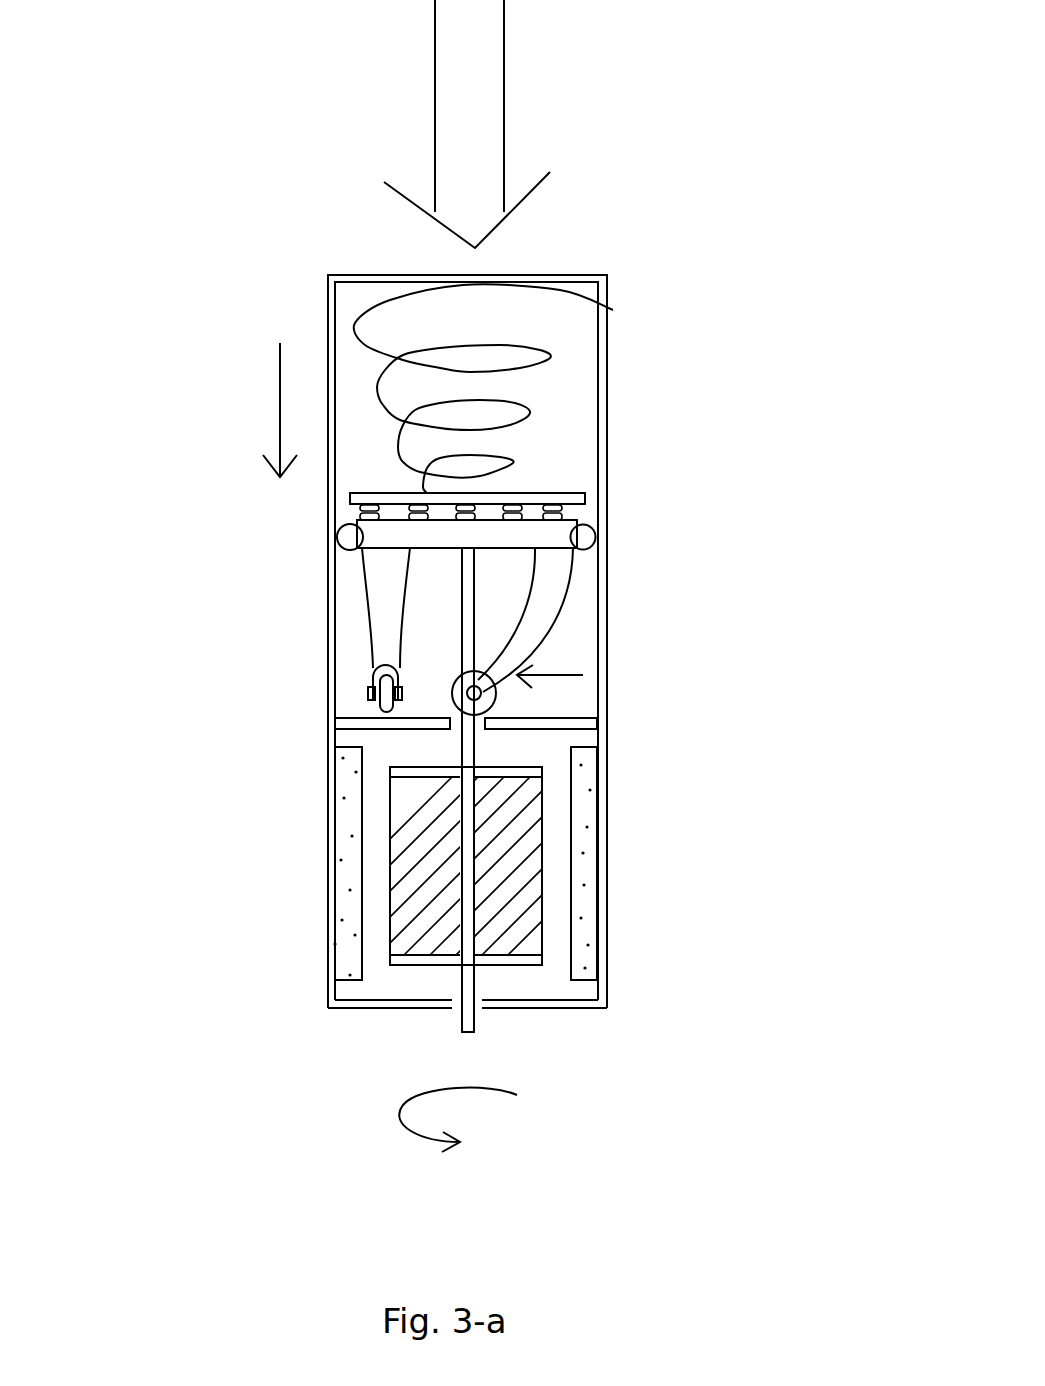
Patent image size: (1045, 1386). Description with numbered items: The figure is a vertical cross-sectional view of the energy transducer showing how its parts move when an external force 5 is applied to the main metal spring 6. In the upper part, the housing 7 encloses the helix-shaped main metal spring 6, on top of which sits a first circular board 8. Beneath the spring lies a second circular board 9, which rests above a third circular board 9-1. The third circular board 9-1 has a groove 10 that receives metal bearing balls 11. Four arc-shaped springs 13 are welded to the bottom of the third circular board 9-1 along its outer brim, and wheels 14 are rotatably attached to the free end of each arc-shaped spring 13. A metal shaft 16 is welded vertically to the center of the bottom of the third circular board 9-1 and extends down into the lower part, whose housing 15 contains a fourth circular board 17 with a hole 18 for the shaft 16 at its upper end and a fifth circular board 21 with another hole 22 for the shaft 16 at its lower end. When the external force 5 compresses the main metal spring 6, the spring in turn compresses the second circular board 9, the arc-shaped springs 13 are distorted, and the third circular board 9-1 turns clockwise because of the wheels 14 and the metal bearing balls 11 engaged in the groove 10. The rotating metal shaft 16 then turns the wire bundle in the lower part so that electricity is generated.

The external force 5 is at (477, 127).
The main metal spring 6 is at (613, 310).
The housing 7 is at (607, 432).
The first circular board 8 is at (555, 273).
The second circular board 9 is at (352, 493).
The third circular board 9-1 is at (535, 537).
The groove 10 is at (360, 522).
The metal bearing balls 11 is at (350, 537).
The arc-shaped springs 13 is at (533, 605).
The wheels 14 is at (385, 693).
The housing 15 is at (335, 947).
The metal shaft 16 is at (462, 572).
The fourth circular board 17 is at (572, 725).
The hole 18 is at (480, 732).
The fifth circular board 21 is at (605, 1008).
The hole 22 is at (477, 1010).